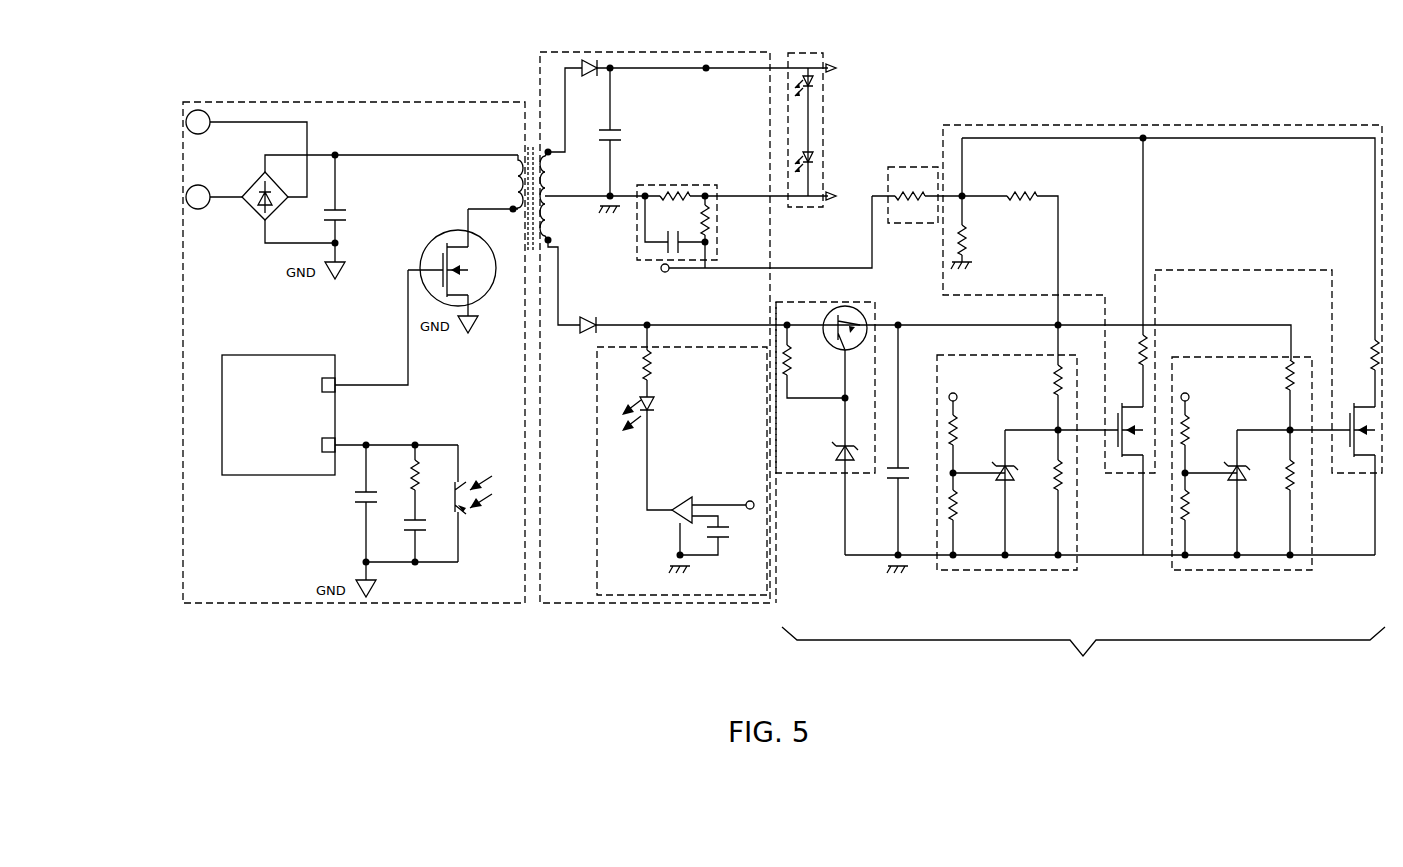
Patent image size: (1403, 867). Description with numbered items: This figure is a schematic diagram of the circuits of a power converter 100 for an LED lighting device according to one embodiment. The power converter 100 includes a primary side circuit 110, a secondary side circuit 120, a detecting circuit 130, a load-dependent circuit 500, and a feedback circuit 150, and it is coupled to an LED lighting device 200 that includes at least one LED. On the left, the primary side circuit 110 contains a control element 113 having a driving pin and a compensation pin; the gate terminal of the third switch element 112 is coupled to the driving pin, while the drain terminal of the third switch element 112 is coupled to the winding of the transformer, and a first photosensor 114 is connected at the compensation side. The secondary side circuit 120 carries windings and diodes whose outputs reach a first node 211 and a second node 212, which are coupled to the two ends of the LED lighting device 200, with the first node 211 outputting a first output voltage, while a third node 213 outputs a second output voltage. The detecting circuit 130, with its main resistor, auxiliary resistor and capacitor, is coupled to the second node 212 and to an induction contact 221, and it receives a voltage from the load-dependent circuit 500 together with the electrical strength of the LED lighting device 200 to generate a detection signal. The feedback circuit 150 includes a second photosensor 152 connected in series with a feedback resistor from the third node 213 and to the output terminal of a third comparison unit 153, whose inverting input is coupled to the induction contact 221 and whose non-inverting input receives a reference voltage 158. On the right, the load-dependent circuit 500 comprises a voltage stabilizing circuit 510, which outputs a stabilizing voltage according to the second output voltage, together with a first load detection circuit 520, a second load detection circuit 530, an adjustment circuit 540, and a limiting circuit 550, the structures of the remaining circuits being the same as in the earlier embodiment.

The power converter 100 is at (354, 621).
The primary side circuit 110 is at (290, 103).
The third switch element 112 is at (440, 233).
The control element 113 is at (265, 476).
The first photosensor 114 is at (462, 517).
The secondary side circuit 120 is at (590, 53).
The detecting circuit 130 is at (638, 212).
The feedback circuit 150 is at (597, 505).
The second photosensor 152 is at (652, 400).
The third comparison unit 153 is at (686, 497).
The reference voltage 158 is at (722, 542).
The LED lighting device 200 is at (825, 112).
The first node 211 is at (708, 72).
The second node 212 is at (702, 186).
The third node 213 is at (589, 316).
The induction contact 221 is at (668, 274).
The load-dependent circuit 500 is at (1083, 661).
The voltage stabilizing circuit 510 is at (878, 312).
The first load detection circuit 520 is at (1002, 572).
The second load detection circuit 530 is at (1234, 572).
The adjustment circuit 540 is at (1182, 125).
The limiting circuit 550 is at (915, 167).